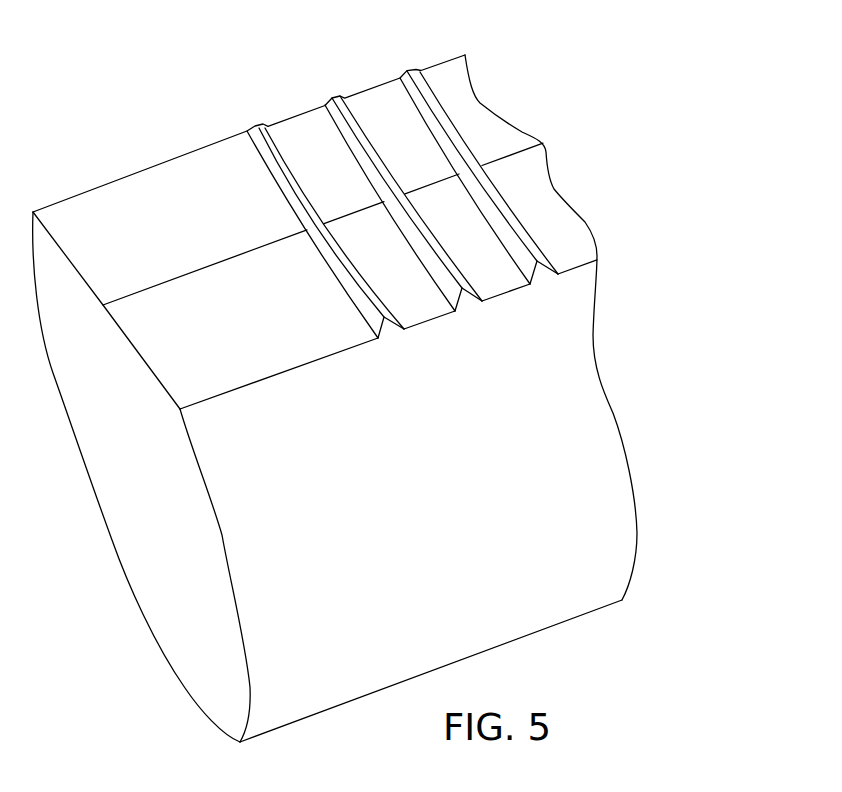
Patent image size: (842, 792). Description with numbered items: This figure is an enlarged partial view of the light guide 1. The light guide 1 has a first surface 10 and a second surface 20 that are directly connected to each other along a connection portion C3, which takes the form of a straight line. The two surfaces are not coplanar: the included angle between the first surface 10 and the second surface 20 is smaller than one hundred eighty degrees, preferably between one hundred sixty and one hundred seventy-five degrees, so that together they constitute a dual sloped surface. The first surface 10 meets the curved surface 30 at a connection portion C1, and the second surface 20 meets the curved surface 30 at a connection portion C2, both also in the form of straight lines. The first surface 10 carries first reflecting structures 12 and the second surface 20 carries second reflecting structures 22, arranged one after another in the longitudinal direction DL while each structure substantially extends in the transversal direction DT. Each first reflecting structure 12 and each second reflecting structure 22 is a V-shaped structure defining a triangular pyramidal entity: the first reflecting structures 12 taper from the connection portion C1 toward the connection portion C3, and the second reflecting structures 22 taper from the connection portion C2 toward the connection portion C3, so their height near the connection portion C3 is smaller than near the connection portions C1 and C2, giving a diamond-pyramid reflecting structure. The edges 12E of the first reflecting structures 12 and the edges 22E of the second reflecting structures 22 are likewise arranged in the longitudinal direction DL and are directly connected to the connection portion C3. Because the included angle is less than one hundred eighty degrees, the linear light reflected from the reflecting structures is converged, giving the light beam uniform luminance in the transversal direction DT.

The light guide 1 is at (328, 25).
The first surface 10 is at (208, 377).
The first reflecting structures 12 is at (370, 342).
The edges of the first reflecting structures 12E is at (373, 285).
The second surface 20 is at (117, 203).
The second reflecting structures 22 is at (250, 145).
The edges of the second reflecting structures 22E is at (291, 166).
The curved surface 30 is at (567, 438).
The connection portion C1 is at (290, 373).
The connection portion C2 is at (167, 160).
The connection portion C3 is at (267, 243).
The transversal direction DT is at (630, 137).
The longitudinal direction DL is at (593, 153).